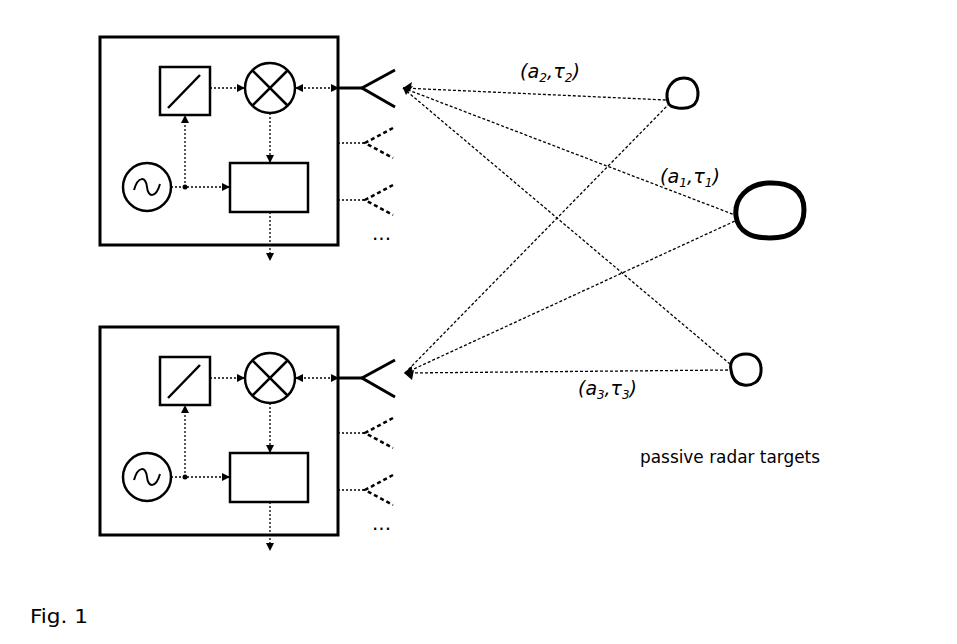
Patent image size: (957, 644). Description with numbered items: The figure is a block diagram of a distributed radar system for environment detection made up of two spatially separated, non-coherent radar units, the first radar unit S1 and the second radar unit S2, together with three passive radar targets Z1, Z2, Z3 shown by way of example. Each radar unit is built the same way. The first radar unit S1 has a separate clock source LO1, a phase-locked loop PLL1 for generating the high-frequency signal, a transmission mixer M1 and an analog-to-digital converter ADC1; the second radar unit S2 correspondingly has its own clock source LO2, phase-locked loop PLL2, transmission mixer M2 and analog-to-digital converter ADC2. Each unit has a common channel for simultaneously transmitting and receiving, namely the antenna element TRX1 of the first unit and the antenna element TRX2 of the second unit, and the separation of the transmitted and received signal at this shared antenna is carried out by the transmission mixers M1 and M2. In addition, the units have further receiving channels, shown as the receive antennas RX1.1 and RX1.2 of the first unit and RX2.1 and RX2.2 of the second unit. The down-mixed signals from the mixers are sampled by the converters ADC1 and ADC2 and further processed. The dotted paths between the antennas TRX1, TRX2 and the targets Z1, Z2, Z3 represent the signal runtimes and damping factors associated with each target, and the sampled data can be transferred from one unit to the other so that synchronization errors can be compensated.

The first radar unit S1 is at (219, 432).
The second radar unit S2 is at (219, 142).
The phase-locked loop of the first radar unit PLL1 is at (187, 367).
The phase-locked loop of the second radar unit PLL2 is at (187, 77).
The transmission mixer of the first radar unit M1 is at (270, 366).
The transmission mixer of the second radar unit M2 is at (270, 76).
The analog-to-digital converter of the first radar unit ADC1 is at (269, 477).
The analog-to-digital converter of the second radar unit ADC2 is at (269, 187).
The clock source of the first radar unit LO1 is at (147, 493).
The clock source of the second radar unit LO2 is at (147, 203).
The common transmit/receive channel of the first radar unit TRX1 is at (381, 359).
The common transmit/receive channel of the second radar unit TRX2 is at (381, 69).
The further receive channel of the first radar unit RX1.1 is at (398, 433).
The further receive channel of the first radar unit RX1.2 is at (398, 490).
The further receive channel of the second radar unit RX2.1 is at (398, 143).
The further receive channel of the second radar unit RX2.2 is at (398, 200).
The passive radar target Z1 is at (787, 210).
The passive radar target Z2 is at (700, 93).
The passive radar target Z3 is at (764, 369).